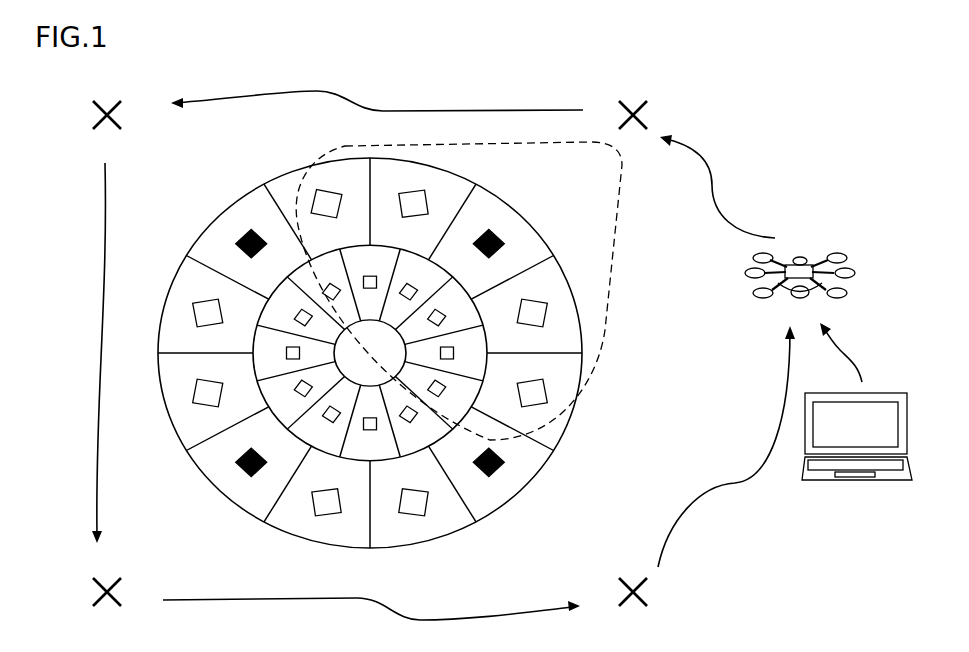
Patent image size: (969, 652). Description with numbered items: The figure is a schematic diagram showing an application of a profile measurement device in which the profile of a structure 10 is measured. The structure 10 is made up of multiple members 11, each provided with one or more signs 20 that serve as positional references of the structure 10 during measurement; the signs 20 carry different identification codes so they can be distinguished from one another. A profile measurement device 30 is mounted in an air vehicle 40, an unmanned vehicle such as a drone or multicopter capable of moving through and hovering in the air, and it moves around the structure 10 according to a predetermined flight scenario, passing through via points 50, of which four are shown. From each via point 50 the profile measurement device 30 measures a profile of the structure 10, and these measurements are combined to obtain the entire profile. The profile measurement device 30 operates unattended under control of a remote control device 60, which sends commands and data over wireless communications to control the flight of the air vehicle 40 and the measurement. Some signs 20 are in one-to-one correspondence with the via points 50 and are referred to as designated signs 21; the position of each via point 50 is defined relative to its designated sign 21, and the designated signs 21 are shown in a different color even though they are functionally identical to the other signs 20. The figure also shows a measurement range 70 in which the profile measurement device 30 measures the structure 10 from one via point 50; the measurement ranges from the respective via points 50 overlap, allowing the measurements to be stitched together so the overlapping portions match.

The structure 10 is at (406, 353).
The member 11 is at (562, 327).
The sign 20 is at (203, 302).
The designated sign 21 is at (247, 237).
The profile measurement device 30 is at (809, 235).
The air vehicle 40 is at (810, 253).
The via point 50 is at (655, 112).
The remote control device 60 is at (813, 480).
The measurement range 70 is at (613, 267).